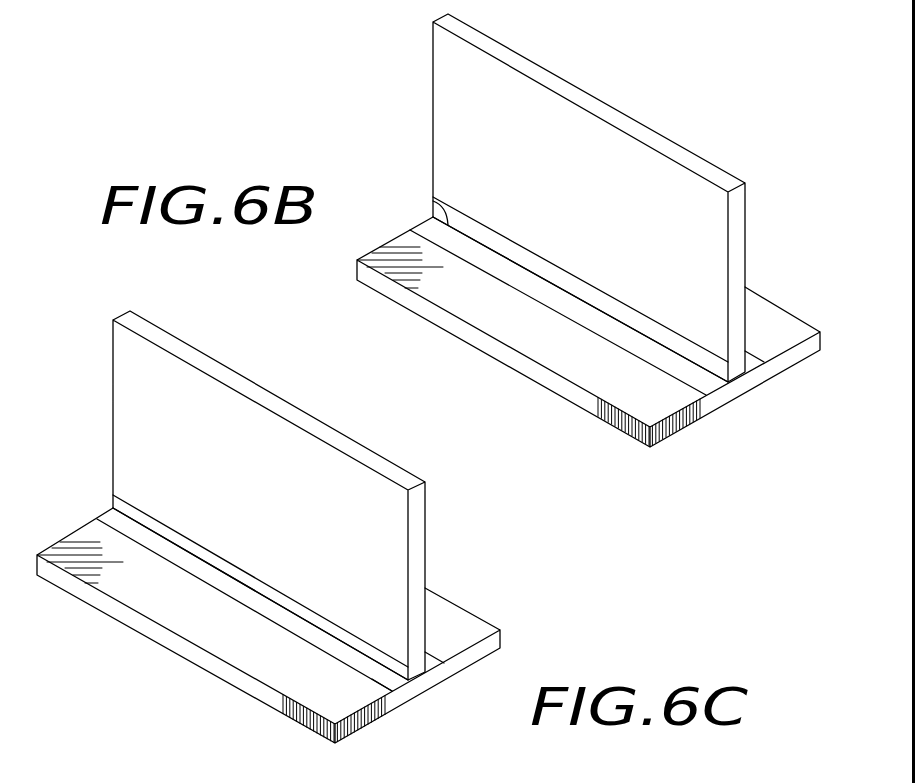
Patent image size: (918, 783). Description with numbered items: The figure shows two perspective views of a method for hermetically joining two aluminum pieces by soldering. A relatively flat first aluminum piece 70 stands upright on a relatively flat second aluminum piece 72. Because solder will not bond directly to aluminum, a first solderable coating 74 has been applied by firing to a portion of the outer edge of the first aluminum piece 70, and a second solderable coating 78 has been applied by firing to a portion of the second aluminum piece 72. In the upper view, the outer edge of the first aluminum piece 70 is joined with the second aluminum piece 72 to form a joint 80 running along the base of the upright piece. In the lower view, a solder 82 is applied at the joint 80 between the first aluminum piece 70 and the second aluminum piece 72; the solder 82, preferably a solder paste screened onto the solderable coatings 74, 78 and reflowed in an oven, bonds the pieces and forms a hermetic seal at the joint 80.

In FIG. 6B, the first aluminum piece 70 is at (737, 225).
In FIG. 6C, the first aluminum piece 70 is at (418, 525).
In FIG. 6B, the second aluminum piece 72 is at (437, 309).
In FIG. 6C, the second aluminum piece 72 is at (118, 612).
In FIG. 6B, the first solderable coating 74 is at (482, 231).
In FIG. 6C, the first solderable coating 74 is at (165, 531).
In FIG. 6B, the second solderable coating 78 is at (570, 313).
In FIG. 6C, the second solderable coating 78 is at (254, 611).
In FIG. 6B, the joint 80 is at (432, 201).
In FIG. 6C, the solder 82 is at (392, 680).